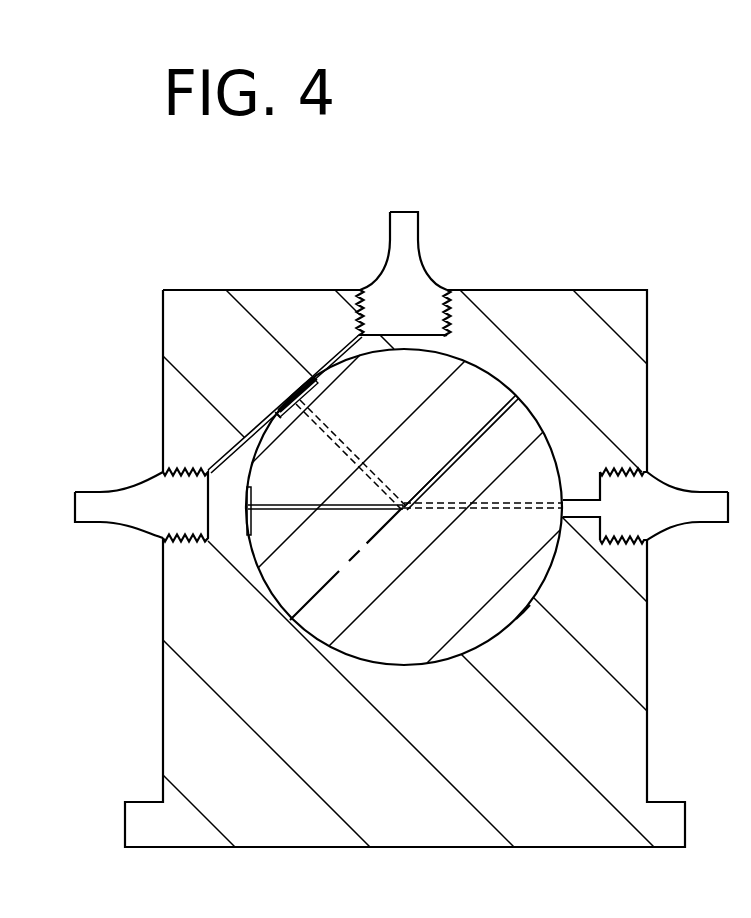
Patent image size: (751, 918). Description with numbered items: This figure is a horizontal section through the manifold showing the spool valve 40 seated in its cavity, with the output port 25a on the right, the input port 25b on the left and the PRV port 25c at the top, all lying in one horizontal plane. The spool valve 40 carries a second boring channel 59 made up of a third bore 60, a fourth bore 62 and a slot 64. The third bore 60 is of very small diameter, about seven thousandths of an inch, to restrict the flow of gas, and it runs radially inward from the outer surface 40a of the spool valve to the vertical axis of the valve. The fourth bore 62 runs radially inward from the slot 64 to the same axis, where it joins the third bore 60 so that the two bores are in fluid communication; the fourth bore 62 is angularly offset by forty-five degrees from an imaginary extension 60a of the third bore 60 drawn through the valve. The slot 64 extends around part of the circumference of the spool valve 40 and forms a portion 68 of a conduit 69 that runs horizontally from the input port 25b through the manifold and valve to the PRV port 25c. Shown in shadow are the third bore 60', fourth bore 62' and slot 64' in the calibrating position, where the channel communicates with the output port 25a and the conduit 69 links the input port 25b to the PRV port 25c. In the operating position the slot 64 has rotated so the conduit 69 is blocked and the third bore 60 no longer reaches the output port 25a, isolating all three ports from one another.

The output port 25a is at (652, 540).
The input port 25b is at (165, 476).
The PRV port 25c is at (447, 290).
The spool valve 40 is at (300, 622).
The outer surface 40a is at (524, 612).
The second boring channel 59 is at (428, 490).
The third bore 60 is at (461, 452).
The third bore in calibrating position 60' is at (483, 526).
The imaginary extension of the third bore 60a is at (333, 578).
The fourth bore 62 is at (325, 530).
The fourth bore in calibrating position 62' is at (350, 444).
The slot 64 is at (278, 504).
The slot in calibrating position 64' is at (298, 436).
The portion of conduit 68 is at (304, 380).
The conduit 69 is at (256, 427).